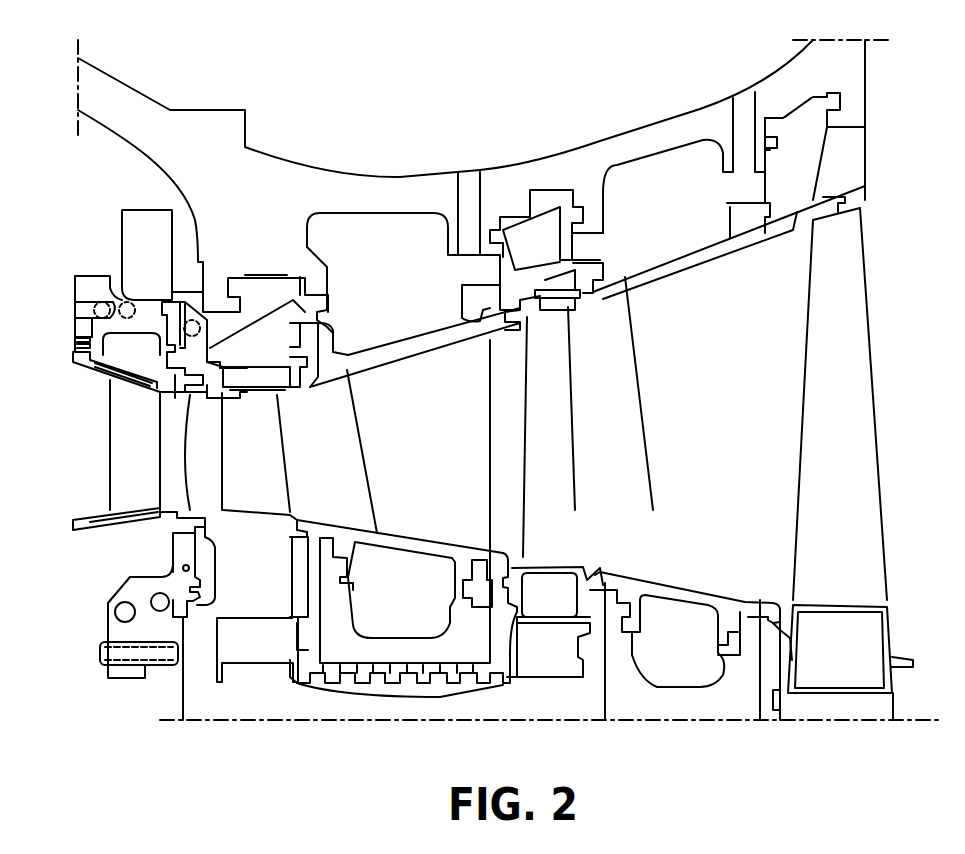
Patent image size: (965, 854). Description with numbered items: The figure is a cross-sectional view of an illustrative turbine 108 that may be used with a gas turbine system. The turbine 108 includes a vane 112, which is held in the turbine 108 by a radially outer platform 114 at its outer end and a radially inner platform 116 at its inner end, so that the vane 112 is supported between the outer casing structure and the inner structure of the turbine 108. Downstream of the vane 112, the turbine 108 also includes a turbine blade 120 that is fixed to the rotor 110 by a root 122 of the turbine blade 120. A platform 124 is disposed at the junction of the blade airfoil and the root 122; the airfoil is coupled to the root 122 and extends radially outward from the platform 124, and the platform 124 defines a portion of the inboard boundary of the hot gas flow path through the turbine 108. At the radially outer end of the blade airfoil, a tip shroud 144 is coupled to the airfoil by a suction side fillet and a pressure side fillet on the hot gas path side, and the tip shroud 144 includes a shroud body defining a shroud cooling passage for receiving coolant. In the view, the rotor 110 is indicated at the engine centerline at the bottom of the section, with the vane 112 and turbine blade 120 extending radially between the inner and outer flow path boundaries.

The turbine 108 is at (388, 160).
The rotor 110 is at (580, 695).
The vane 112 is at (400, 440).
The radially outer platform 114 is at (405, 360).
The radially inner platform 116 is at (467, 543).
The turbine blade 120 is at (560, 423).
The root 122 is at (553, 637).
The platform 124 is at (540, 554).
The tip shroud 144 is at (548, 303).